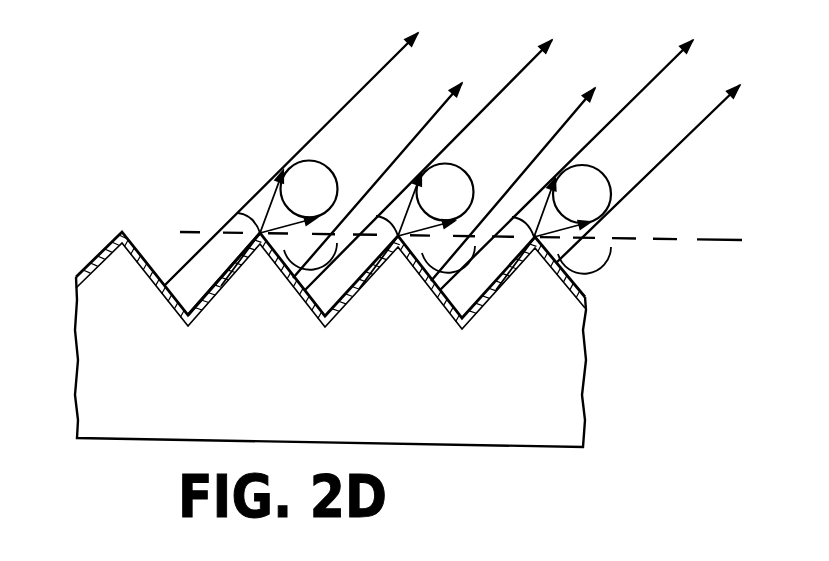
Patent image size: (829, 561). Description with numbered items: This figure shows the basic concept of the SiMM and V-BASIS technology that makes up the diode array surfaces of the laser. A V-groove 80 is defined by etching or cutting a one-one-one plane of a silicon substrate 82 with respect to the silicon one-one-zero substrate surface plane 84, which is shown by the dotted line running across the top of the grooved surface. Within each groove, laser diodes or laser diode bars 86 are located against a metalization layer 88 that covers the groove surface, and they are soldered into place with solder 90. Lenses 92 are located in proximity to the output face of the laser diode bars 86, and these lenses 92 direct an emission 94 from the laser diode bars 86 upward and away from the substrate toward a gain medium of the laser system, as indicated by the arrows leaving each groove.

The V-groove 80 is at (105, 247).
The silicon substrate 82 is at (548, 415).
The silicon 110 substrate surface plane 84 is at (716, 240).
The laser diode bars 86 is at (212, 255).
The metalization layer 88 is at (222, 283).
The solder 90 is at (170, 262).
The lenses 92 is at (307, 160).
The emission 94 is at (383, 69).